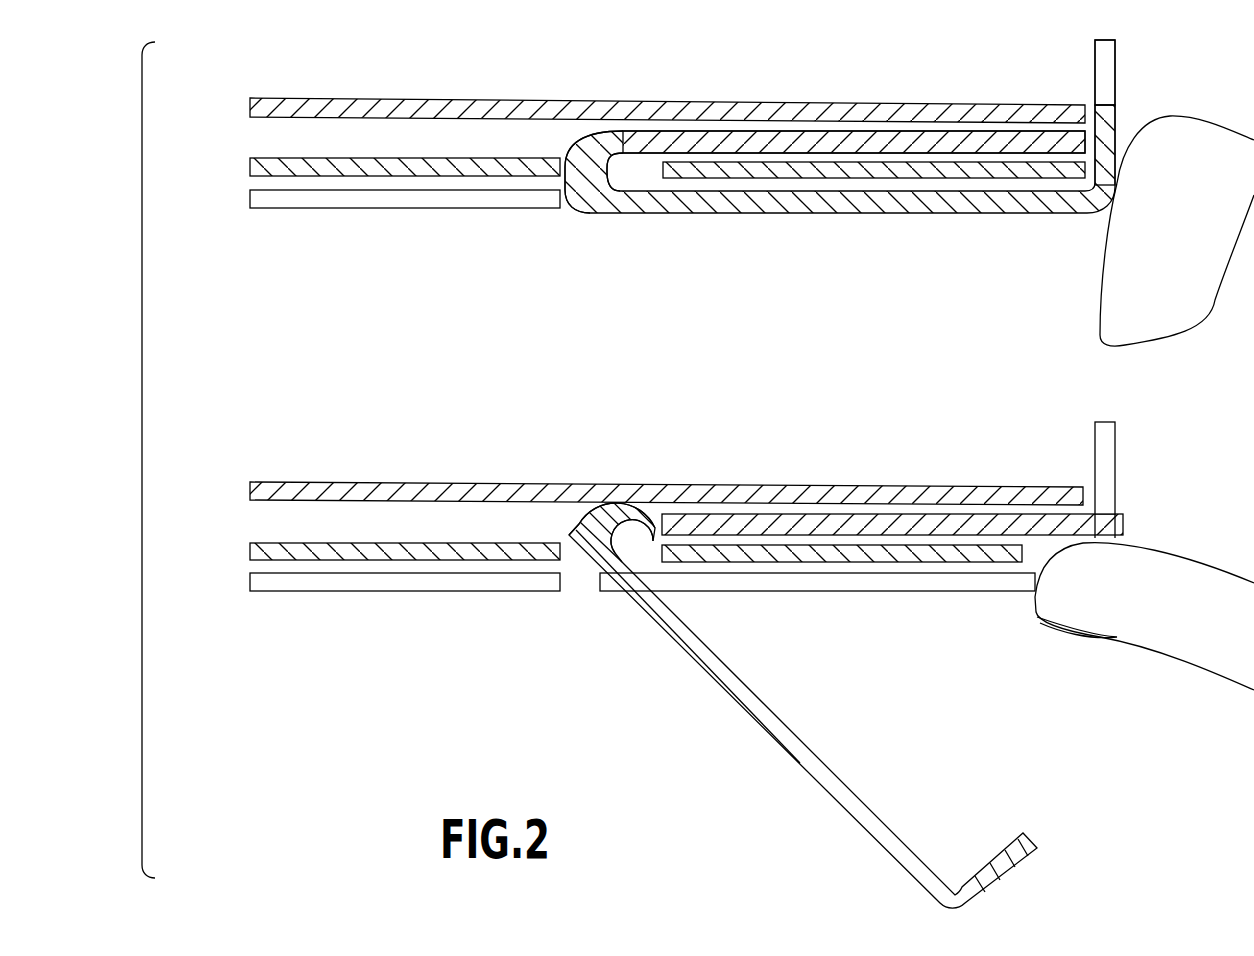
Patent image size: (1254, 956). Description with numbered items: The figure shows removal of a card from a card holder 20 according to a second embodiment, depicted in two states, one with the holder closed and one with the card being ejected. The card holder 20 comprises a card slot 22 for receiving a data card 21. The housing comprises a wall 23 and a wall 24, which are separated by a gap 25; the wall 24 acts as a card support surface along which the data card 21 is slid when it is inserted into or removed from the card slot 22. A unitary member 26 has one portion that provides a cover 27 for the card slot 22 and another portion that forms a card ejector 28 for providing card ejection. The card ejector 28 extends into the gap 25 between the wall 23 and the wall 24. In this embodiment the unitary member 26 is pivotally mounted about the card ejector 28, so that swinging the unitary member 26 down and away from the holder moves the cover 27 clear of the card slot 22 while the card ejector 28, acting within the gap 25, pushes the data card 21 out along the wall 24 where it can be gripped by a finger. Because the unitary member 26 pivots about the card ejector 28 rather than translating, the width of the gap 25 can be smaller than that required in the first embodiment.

The card holder 20 is at (236, 112).
The data card 21 is at (862, 134).
The card slot 22 is at (1046, 110).
The wall 23 is at (352, 177).
The wall 24 is at (865, 172).
The gap 25 is at (626, 176).
The unitary member 26 is at (760, 222).
The cover 27 is at (1117, 122).
The card ejector 28 is at (577, 205).